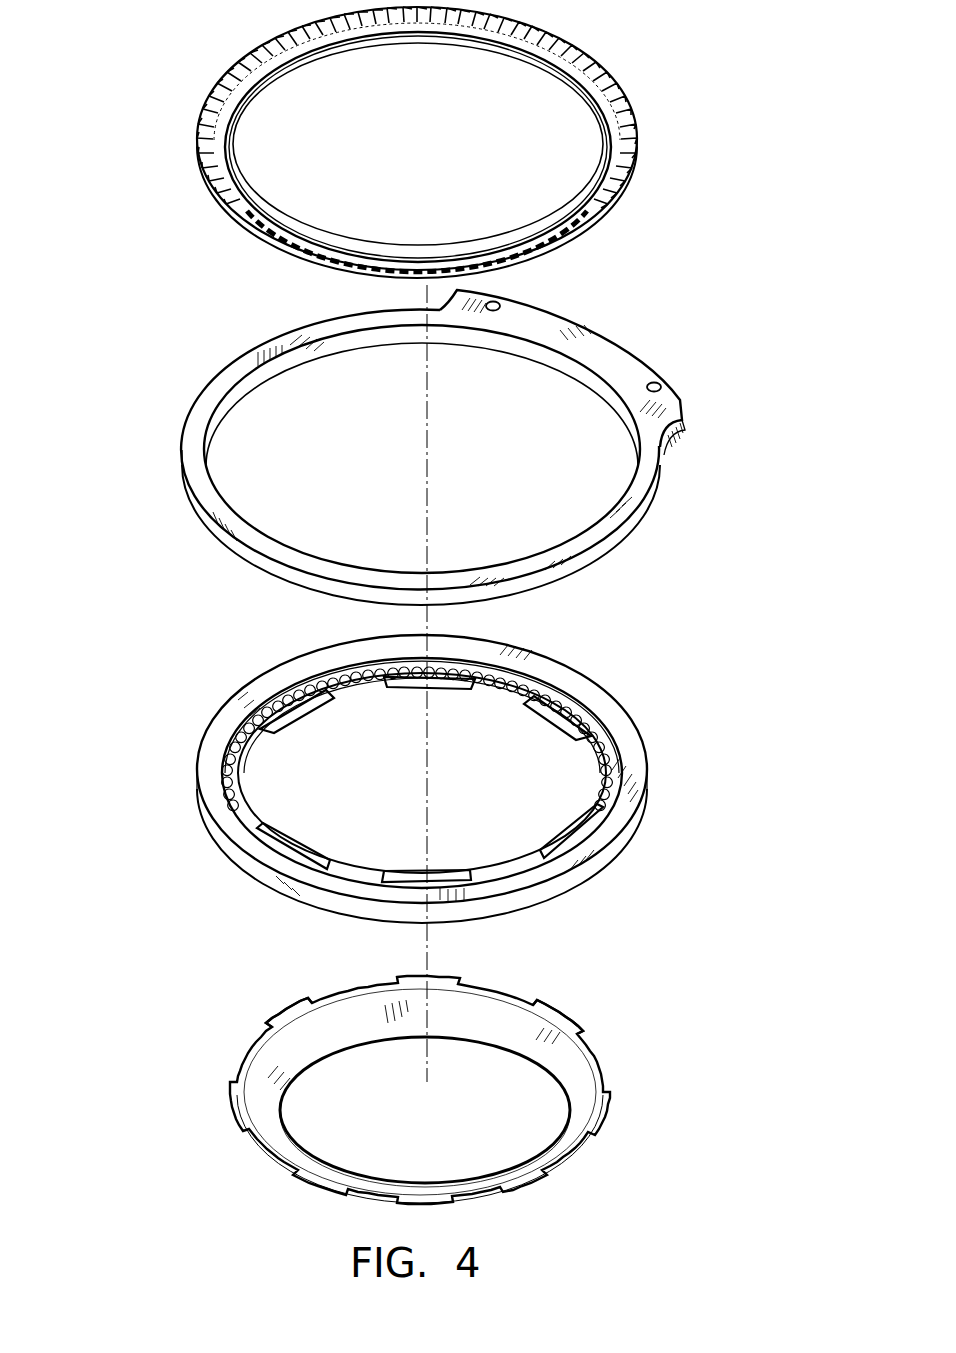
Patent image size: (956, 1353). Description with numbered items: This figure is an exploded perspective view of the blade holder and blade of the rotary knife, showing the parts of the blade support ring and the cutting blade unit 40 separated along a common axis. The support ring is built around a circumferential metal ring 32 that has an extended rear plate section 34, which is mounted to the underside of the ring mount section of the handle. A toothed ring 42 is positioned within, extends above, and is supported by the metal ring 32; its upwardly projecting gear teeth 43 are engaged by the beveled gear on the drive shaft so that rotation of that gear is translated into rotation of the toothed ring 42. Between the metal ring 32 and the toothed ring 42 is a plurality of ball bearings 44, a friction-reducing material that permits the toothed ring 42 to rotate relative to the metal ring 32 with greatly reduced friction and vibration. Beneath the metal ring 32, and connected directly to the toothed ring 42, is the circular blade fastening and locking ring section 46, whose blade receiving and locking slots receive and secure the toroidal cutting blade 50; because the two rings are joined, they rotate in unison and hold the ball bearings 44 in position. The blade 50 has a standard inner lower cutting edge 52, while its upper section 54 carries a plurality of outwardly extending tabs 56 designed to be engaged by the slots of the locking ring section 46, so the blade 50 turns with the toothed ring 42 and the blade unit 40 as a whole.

The cutting blade unit 40 is at (162, 662).
The toothed ring 42 is at (633, 107).
The gear teeth 43 is at (612, 75).
The circumferential metal ring 32 is at (582, 552).
The extended rear plate section 34 is at (627, 360).
The ball bearings 44 is at (587, 706).
The blade fastening and locking ring section 46 is at (617, 820).
The toroidal cutting blade 50 is at (583, 1090).
The inner lower cutting edge 52 is at (318, 1142).
The upper section 54 is at (265, 1042).
The outwardly extending tabs 56 is at (573, 1025).